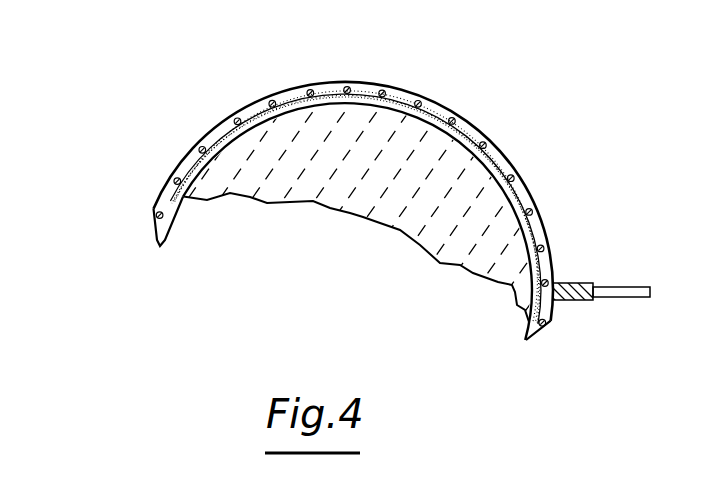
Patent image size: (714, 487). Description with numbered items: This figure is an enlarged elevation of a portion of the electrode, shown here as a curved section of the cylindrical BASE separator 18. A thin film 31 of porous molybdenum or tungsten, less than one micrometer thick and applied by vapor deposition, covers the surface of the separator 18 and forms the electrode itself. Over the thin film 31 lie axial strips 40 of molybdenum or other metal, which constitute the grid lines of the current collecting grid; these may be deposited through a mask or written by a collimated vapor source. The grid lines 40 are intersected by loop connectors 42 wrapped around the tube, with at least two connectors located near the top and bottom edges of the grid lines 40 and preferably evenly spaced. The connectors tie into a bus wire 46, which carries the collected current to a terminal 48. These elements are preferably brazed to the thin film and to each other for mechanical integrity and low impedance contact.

The BASE separator 18 is at (368, 207).
The thin film 31 is at (364, 102).
The axial strips 40 is at (457, 116).
The loop connectors 42 is at (214, 125).
The bus wire 46 is at (578, 283).
The terminal 48 is at (620, 295).